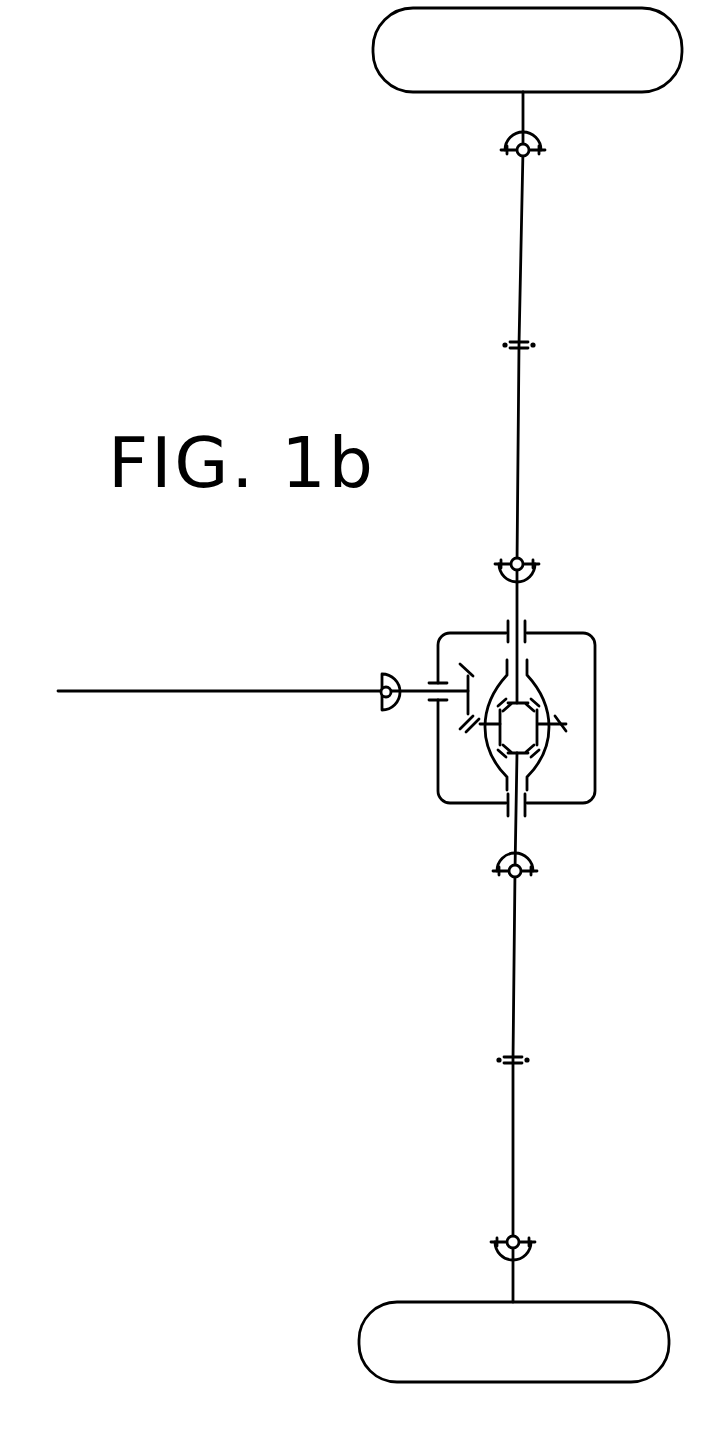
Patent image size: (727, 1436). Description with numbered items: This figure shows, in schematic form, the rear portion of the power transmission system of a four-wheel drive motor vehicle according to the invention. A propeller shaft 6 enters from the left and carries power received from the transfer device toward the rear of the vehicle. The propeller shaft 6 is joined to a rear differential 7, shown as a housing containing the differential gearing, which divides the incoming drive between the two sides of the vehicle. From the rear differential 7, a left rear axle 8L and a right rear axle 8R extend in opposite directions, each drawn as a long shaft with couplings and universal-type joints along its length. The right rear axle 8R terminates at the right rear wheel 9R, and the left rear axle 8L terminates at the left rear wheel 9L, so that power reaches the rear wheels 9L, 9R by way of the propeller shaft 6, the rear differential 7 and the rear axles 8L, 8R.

The propeller shaft 6 is at (138, 689).
The rear differential 7 is at (548, 702).
The rear axle 8R is at (519, 420).
The rear axle 8L is at (513, 1022).
The rear wheel 9R is at (600, 76).
The rear wheel 9L is at (601, 1303).